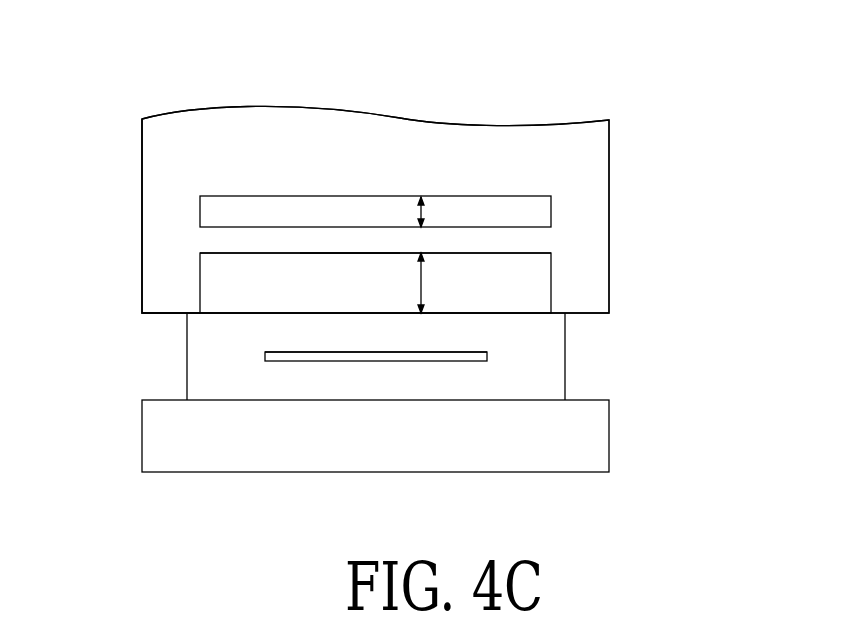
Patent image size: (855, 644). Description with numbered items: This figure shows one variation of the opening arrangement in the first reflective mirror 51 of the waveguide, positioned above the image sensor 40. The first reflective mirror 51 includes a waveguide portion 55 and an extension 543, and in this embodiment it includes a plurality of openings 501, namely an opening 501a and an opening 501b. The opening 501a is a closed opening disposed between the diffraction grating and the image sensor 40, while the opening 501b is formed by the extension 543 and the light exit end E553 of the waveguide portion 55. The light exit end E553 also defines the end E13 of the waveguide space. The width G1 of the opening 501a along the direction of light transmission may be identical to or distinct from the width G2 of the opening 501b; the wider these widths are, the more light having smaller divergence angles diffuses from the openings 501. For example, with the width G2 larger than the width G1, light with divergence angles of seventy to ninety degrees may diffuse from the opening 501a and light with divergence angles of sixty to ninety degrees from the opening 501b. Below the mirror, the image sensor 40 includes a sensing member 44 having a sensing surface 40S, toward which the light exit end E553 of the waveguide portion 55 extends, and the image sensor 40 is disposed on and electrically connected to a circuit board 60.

The first reflective mirror 51 is at (178, 128).
The waveguide portion 55 is at (225, 152).
The extension 543 is at (182, 285).
The openings 501 is at (473, 251).
The opening 501a is at (513, 207).
The opening 501b is at (513, 290).
The end of the waveguide space E13 is at (500, 255).
The light exit end E553 is at (349, 254).
The width of the opening 501a G1 is at (423, 208).
The width of the opening 501b G2 is at (422, 282).
The image sensor 40 is at (565, 378).
The sensing surface 40S is at (293, 350).
The sensing member 44 is at (459, 361).
The circuit board 60 is at (592, 437).